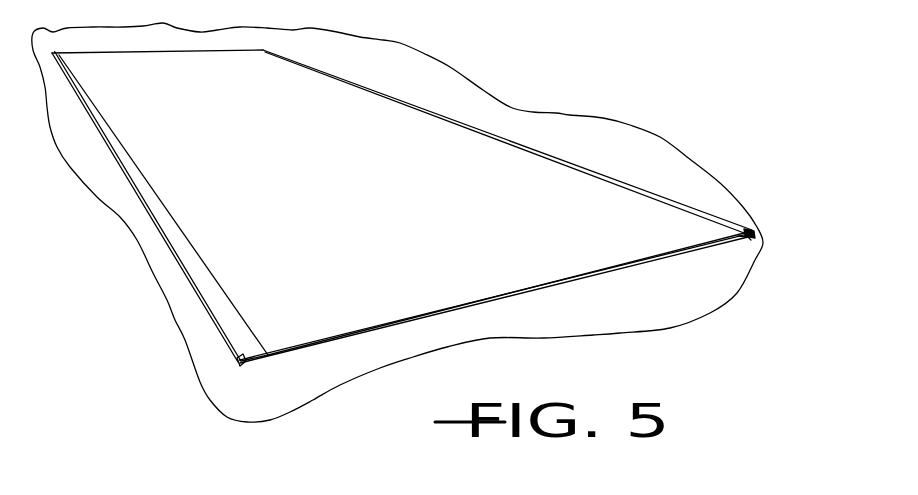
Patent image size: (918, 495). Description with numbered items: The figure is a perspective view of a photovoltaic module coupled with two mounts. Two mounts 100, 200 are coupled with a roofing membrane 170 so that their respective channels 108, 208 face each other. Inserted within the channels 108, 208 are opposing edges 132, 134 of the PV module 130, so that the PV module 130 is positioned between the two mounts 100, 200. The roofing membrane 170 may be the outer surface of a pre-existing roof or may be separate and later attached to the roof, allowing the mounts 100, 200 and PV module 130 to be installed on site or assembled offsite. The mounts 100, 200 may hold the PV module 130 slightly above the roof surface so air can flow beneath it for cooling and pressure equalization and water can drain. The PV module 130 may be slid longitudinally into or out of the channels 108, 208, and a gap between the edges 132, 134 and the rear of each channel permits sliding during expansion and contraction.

The mount 100 is at (237, 333).
The channel 108 is at (248, 366).
The PV module 130 is at (553, 290).
The edge 132 is at (253, 367).
The edge 134 is at (747, 240).
The roofing membrane 170 is at (649, 158).
The mount 200 is at (722, 215).
The channel 208 is at (748, 237).